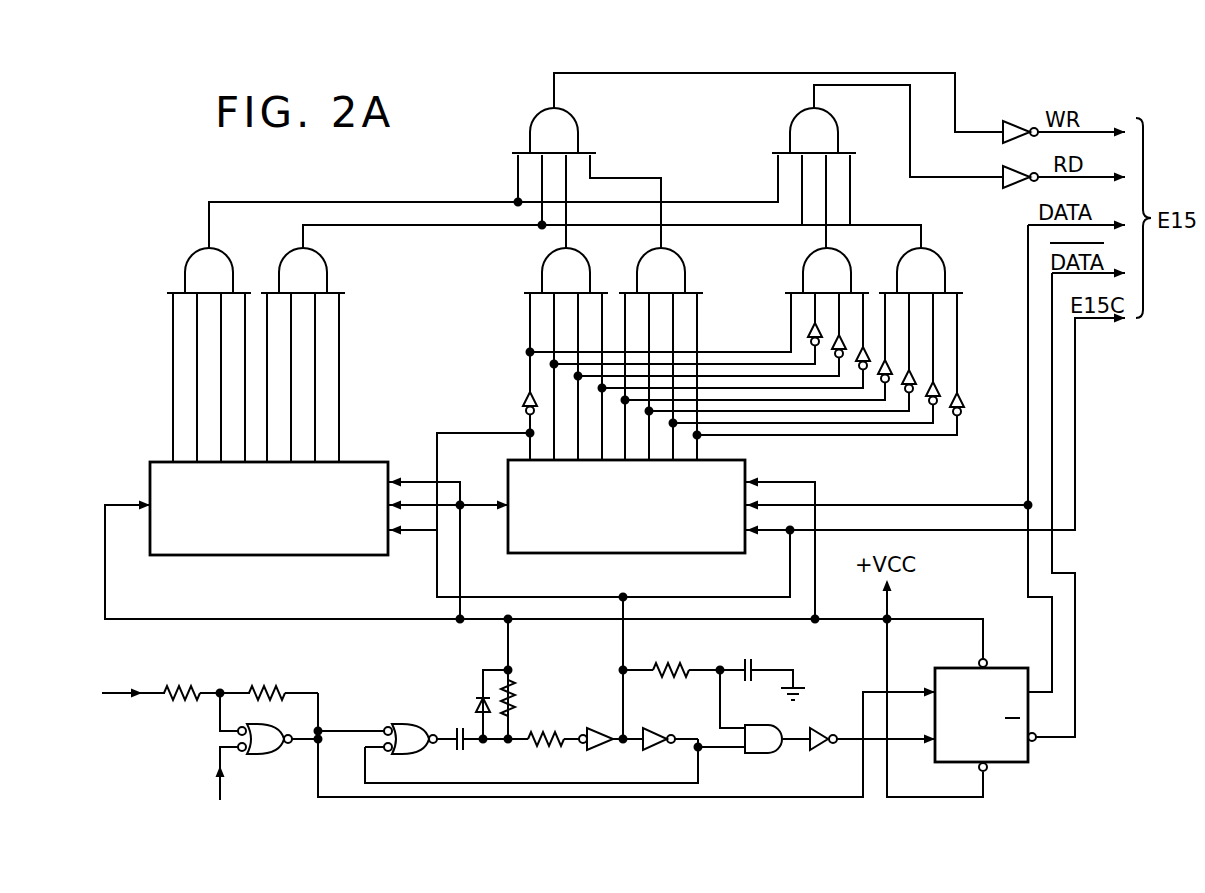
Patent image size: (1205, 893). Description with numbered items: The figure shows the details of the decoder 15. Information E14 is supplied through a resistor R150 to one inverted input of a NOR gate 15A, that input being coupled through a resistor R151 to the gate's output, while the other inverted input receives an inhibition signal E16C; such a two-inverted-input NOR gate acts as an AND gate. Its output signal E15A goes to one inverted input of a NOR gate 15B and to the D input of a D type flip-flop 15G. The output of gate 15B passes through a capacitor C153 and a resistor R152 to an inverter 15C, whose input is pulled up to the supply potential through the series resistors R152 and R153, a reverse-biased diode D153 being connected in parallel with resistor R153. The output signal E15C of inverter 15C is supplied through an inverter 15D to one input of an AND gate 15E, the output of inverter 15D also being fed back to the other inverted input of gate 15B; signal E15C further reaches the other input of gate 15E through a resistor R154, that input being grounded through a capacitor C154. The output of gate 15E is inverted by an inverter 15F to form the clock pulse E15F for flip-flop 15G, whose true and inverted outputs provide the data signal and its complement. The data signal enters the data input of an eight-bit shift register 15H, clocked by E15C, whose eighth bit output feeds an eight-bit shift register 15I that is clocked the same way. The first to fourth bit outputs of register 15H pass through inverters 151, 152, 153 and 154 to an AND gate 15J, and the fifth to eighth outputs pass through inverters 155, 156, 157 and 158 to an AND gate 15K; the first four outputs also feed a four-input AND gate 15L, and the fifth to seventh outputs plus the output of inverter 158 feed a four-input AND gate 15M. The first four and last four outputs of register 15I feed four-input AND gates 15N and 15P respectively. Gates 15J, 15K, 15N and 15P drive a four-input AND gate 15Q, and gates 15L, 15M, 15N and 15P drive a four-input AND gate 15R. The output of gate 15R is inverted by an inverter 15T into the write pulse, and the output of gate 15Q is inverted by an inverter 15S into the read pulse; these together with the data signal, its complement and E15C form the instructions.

The decoder 15 is at (157, 223).
The four-input AND gate 15P is at (232, 254).
The four-input AND gate 15N is at (326, 256).
The four-input AND gate 15R is at (534, 128).
The four-input AND gate 15Q is at (792, 128).
The four-input AND gate 15M is at (582, 259).
The four-input AND gate 15L is at (683, 259).
The AND gate 15K is at (845, 260).
The AND gate 15J is at (944, 266).
The inverter 15T is at (1016, 122).
The inverter 15S is at (1000, 170).
The inverter 157 is at (808, 327).
The inverter 156 is at (832, 341).
The inverter 155 is at (856, 357).
The inverter 154 is at (892, 364).
The inverter 153 is at (916, 377).
The inverter 152 is at (941, 389).
The inverter 151 is at (962, 399).
The inverter 158 is at (525, 400).
The 8-bit shift register 15I is at (276, 556).
The 8-bit shift register 15H is at (634, 554).
The D type flip-flop 15G is at (1012, 668).
The NOR gate 15A is at (274, 754).
The NOR gate 15B is at (406, 726).
The inverter 15C is at (603, 750).
The inverter 15D is at (655, 729).
The AND gate 15E is at (766, 753).
The inverter 15F is at (820, 729).
The resistor R150 is at (206, 684).
The resistor R151 is at (283, 684).
The resistor R152 is at (554, 751).
The resistor R153 is at (538, 698).
The resistor R154 is at (695, 658).
The capacitor C153 is at (484, 750).
The capacitor C154 is at (769, 668).
The diode D153 is at (474, 698).
The information E14 is at (127, 684).
The inhibition signal E16C is at (248, 790).
The output signal E15A is at (352, 797).
The output signal E15C is at (618, 668).
The clock pulse E15F is at (910, 740).